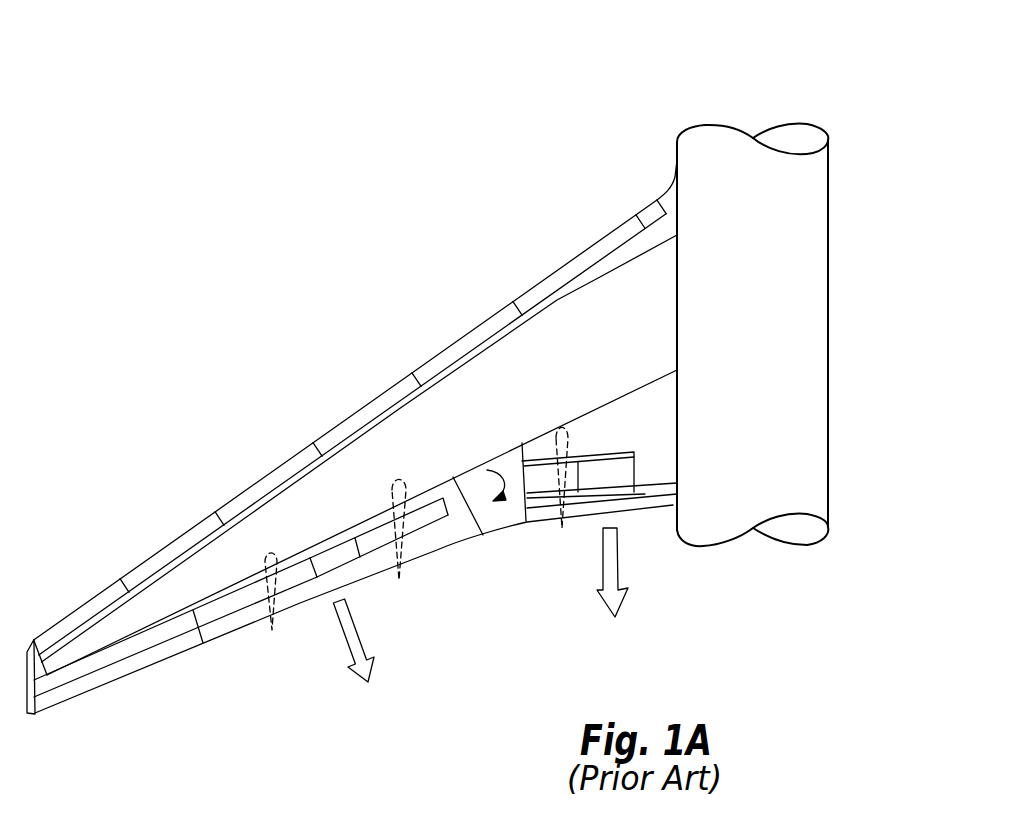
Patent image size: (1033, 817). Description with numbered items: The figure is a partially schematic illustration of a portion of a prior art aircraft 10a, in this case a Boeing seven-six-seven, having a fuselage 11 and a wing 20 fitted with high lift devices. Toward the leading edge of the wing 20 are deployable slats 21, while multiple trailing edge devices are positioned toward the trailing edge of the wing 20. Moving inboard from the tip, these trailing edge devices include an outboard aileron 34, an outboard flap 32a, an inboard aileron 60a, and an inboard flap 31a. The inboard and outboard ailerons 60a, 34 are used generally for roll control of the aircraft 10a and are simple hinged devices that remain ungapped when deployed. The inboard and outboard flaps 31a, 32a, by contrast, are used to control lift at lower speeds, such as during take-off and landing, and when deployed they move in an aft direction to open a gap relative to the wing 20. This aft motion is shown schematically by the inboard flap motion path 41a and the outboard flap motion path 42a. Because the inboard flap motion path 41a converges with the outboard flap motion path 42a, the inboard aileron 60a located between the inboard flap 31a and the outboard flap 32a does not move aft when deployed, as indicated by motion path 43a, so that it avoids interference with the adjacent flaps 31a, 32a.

The aircraft 10a is at (763, 99).
The fuselage 11 is at (673, 155).
The wing 20 is at (121, 561).
The deployable slats 21 is at (453, 352).
The inboard flap 31a is at (639, 511).
The outboard flap 32a is at (438, 551).
The outboard aileron 34 is at (130, 665).
The inboard flap motion path 41a is at (605, 608).
The outboard flap motion path 42a is at (357, 688).
The motion path 43a is at (505, 468).
The inboard aileron 60a is at (500, 517).